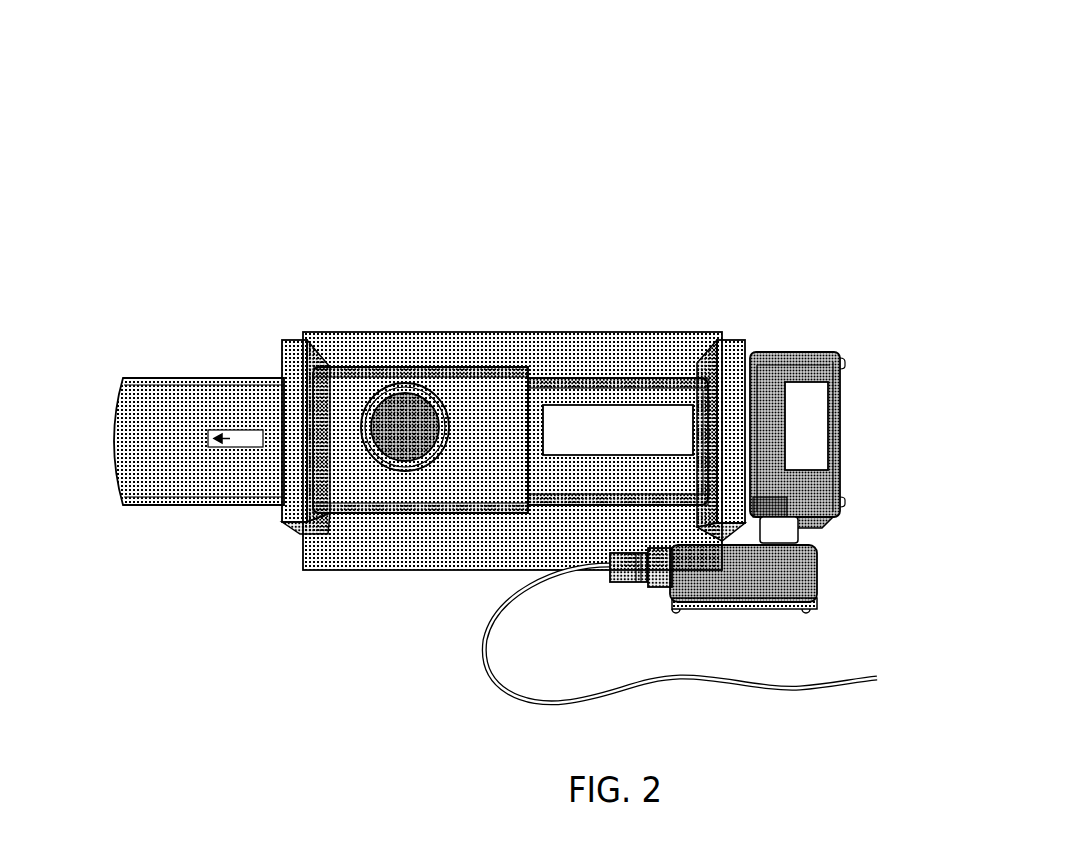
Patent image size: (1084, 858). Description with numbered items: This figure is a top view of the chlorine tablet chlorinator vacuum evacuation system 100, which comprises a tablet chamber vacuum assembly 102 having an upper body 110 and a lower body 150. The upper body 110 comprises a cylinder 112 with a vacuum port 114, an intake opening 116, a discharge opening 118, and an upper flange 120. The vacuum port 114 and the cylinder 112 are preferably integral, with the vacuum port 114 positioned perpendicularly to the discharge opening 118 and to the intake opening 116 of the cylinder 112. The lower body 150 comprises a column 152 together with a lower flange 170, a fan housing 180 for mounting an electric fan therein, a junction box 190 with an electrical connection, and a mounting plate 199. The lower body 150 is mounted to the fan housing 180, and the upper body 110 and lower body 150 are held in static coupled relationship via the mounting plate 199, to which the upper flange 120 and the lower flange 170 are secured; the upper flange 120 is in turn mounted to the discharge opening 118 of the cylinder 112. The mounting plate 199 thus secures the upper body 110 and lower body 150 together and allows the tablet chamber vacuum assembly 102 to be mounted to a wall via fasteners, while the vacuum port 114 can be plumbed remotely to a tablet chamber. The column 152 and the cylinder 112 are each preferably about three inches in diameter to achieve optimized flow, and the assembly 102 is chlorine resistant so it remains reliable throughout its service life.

The chlorine tablet chlorinator vacuum evacuation system 100 is at (623, 70).
The tablet chamber vacuum assembly 102 is at (638, 105).
The upper body 110 is at (513, 366).
The cylinder 112 is at (432, 364).
The vacuum port 114 is at (398, 377).
The intake opening 116 is at (532, 380).
The discharge opening 118 is at (116, 407).
The upper flange 120 is at (290, 334).
The lower body 150 is at (598, 376).
The column 152 is at (640, 376).
The lower flange 170 is at (741, 337).
The fan housing 180 is at (835, 519).
The junction box 190 is at (724, 611).
The mounting plate 199 is at (397, 571).